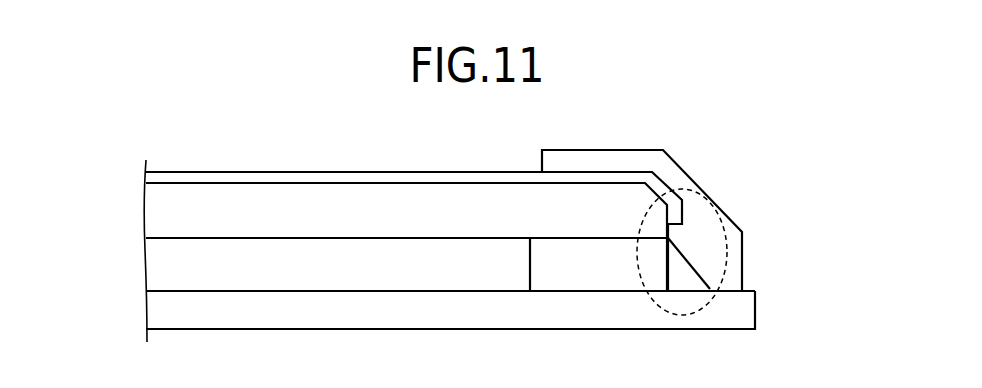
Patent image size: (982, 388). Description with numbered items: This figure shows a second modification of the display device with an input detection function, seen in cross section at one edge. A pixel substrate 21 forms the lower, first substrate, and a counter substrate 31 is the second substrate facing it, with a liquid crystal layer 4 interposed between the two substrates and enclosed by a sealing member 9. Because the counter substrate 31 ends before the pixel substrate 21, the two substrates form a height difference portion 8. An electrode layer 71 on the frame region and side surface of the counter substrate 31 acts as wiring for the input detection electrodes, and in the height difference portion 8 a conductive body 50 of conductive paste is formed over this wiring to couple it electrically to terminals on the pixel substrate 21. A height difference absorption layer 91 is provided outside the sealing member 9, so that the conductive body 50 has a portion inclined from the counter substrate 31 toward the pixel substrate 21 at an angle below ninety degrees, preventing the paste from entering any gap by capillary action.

The counter substrate 31 is at (256, 210).
The electrode layer 71 is at (353, 178).
The liquid crystal layer 4 is at (450, 265).
The conductive body 50 is at (733, 233).
The height difference portion 8 is at (727, 240).
The pixel substrate 21 is at (497, 305).
The sealing member 9 is at (588, 267).
The height difference absorption layer 91 is at (680, 267).